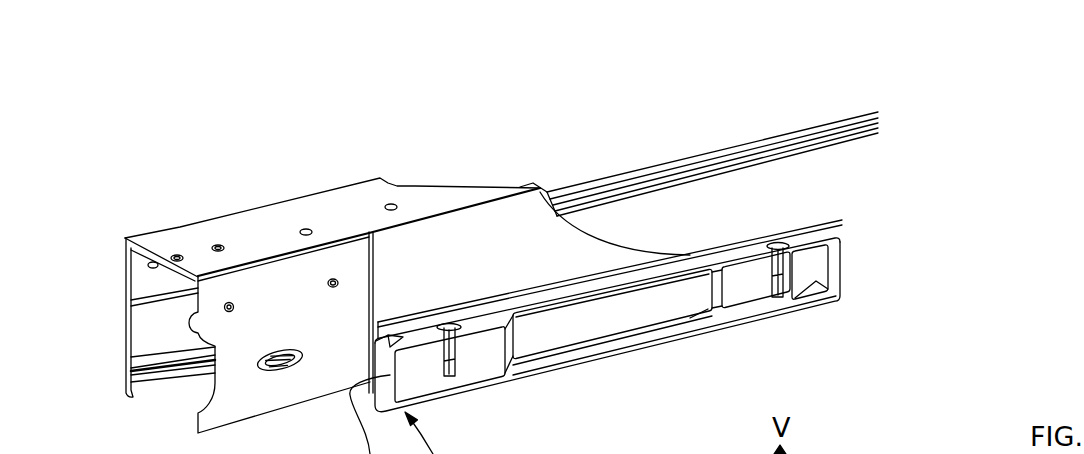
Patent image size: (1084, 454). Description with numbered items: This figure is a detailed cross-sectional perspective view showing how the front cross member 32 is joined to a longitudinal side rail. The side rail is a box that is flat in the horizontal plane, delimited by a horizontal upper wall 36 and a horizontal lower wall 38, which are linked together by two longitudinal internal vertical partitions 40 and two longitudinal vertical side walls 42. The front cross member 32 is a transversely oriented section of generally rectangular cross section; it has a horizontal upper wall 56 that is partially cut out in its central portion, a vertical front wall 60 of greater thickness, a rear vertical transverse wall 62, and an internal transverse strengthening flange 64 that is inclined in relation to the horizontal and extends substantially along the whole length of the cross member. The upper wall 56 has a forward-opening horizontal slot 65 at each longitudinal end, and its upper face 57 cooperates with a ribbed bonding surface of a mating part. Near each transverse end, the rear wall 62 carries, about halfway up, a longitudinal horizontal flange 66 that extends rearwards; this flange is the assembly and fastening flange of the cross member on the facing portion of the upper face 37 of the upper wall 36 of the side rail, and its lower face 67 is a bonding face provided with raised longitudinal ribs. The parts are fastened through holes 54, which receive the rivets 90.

The front cross member 32 is at (662, 151).
The horizontal upper wall 36 is at (648, 290).
The upper face 37 is at (533, 317).
The horizontal lower wall 38 is at (625, 355).
The longitudinal internal vertical partition 40 is at (720, 293).
The longitudinal vertical side wall 42 is at (837, 263).
The hole 54 is at (218, 246).
The horizontal upper wall 56 is at (252, 236).
The upper face 57 is at (347, 200).
The vertical front wall 60 is at (150, 326).
The rear vertical transverse wall 62 is at (569, 252).
The internal transverse strengthening flange 64 is at (749, 198).
The forward-opening horizontal slot 65 is at (131, 289).
The longitudinal horizontal flange 66 is at (488, 318).
The lower face 67 is at (597, 300).
The rivet 90 is at (441, 320).